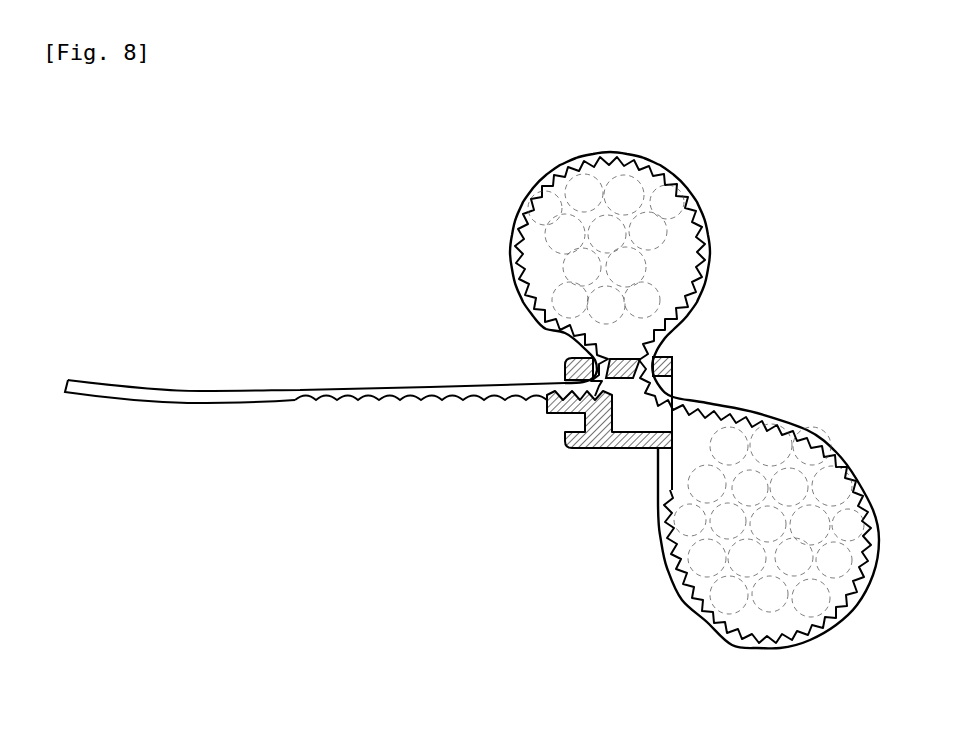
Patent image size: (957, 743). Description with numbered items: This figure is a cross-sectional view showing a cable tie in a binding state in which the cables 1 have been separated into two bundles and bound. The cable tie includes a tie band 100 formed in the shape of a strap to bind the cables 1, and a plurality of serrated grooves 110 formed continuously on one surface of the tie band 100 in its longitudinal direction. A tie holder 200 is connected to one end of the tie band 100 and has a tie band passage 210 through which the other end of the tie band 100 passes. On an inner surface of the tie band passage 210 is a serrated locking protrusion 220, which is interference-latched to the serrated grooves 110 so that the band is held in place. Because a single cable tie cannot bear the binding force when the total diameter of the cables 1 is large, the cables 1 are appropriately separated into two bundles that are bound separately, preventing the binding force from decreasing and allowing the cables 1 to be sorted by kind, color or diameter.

The cables 1 is at (572, 172).
The tie band 100 is at (388, 385).
The serrated grooves 110 is at (386, 401).
The tie holder 200 is at (595, 453).
The tie band passage 210 is at (660, 421).
The serrated locking protrusion 220 is at (550, 412).